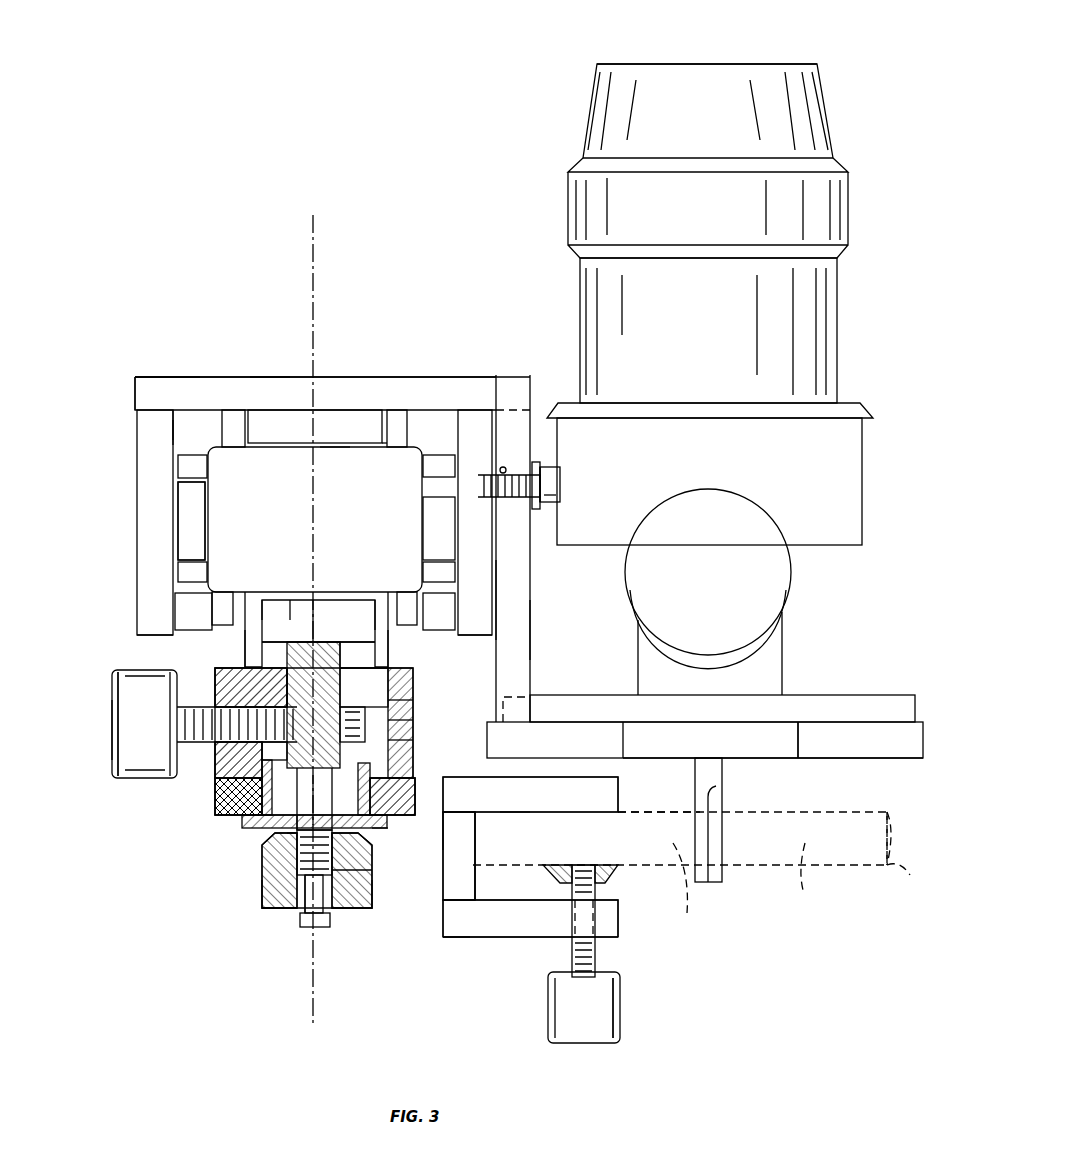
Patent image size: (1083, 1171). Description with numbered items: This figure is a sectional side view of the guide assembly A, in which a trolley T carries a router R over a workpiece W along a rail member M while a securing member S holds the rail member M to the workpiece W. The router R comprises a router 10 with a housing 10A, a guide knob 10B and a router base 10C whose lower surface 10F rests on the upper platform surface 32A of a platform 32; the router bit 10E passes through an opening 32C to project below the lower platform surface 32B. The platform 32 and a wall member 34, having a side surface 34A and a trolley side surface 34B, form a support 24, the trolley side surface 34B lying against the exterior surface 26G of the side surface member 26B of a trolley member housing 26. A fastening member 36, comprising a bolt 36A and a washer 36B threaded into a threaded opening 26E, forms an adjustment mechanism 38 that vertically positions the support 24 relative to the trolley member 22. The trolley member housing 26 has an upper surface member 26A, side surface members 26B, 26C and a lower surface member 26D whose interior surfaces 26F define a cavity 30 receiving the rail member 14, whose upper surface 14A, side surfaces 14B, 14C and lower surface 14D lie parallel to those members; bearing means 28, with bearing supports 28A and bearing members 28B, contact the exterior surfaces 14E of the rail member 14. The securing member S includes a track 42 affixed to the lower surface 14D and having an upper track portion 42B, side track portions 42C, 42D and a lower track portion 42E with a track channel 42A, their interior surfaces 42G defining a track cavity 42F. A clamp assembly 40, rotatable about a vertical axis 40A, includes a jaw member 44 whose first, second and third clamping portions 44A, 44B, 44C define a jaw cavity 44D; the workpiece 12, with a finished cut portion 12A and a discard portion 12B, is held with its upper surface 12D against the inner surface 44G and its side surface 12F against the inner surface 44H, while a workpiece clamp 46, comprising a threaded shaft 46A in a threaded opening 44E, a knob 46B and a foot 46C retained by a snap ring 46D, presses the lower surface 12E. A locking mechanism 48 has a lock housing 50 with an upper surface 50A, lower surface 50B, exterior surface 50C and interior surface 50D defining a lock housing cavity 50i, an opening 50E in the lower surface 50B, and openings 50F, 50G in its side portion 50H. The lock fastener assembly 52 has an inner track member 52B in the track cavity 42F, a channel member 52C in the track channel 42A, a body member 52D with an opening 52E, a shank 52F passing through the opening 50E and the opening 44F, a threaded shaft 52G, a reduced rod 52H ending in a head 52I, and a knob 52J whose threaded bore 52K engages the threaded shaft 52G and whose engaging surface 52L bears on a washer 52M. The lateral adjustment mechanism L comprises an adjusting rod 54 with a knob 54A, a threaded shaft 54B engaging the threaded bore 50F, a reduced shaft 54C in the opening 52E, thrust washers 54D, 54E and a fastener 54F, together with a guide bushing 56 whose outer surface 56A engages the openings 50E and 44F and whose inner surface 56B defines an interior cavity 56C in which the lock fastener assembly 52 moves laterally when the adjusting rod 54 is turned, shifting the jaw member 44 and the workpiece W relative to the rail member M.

The router 10 is at (590, 108).
The housing 10A is at (842, 325).
The guide knob 10B is at (780, 578).
The router base 10C is at (922, 693).
The router bit 10E is at (720, 882).
The lower surface 10F is at (815, 720).
The workpiece 12 is at (840, 870).
The finished cut portion 12A is at (696, 883).
The discard portion 12B is at (804, 881).
The upper surface 12D is at (838, 810).
The lower surface 12E is at (882, 870).
The side surface 12F is at (441, 870).
The rail member 14 is at (206, 449).
The upper surface 14A is at (393, 440).
The side surface 14B is at (430, 455).
The side surface 14C is at (186, 530).
The lower surface 14D is at (186, 605).
The exterior surfaces 14E is at (353, 445).
The trolley member 22 is at (222, 375).
The support 24 is at (926, 716).
The trolley member housing 26 is at (332, 375).
The upper surface member 26A is at (160, 377).
The side surface member 26B is at (455, 425).
The side surface member 26C is at (137, 422).
The lower surface member 26D is at (178, 633).
The threaded opening 26E is at (505, 473).
The interior surfaces 26F is at (175, 432).
The exterior surface 26G is at (497, 585).
The bearing means 28 is at (300, 425).
The bearing supports 28A is at (265, 420).
The bearing members 28B is at (232, 425).
The cavity 30 is at (186, 415).
The platform 32 is at (890, 760).
The upper platform surface 32A is at (850, 722).
The lower platform surface 32B is at (812, 770).
The opening 32C is at (775, 758).
The wall member 34 is at (515, 612).
The side surface 34A is at (532, 632).
The trolley side surface 34B is at (500, 680).
The fastening member 36 is at (565, 478).
The bolt 36A is at (560, 495).
The washer 36B is at (540, 510).
The adjustment mechanism 38 is at (556, 466).
The clamp assembly 40 is at (618, 938).
The vertical axis 40A is at (313, 620).
The track 42 is at (275, 588).
The track channel 42A is at (345, 655).
The upper track portion 42B is at (325, 592).
The side track portion 42C is at (246, 640).
The side track portion 42D is at (390, 635).
The lower track portion 42E is at (374, 603).
The track cavity 42F is at (298, 596).
The interior surfaces 42G is at (260, 610).
The jaw member 44 is at (620, 925).
The first clamping portion 44A is at (606, 798).
The second clamping portion 44B is at (528, 937).
The third clamping portion 44C is at (466, 940).
The jaw cavity 44D is at (500, 926).
The threaded opening 44E is at (598, 912).
The opening 44F is at (258, 814).
The inner surface 44G is at (515, 820).
The inner surface 44H is at (446, 857).
The workpiece clamp 46 is at (588, 1046).
The threaded shaft 46A is at (550, 975).
The knob 46B is at (610, 1015).
The foot 46C is at (560, 872).
The snap ring 46D is at (583, 868).
The locking mechanism 48 is at (262, 888).
The lock housing 50 is at (415, 768).
The upper surface 50A is at (390, 700).
The lower surface 50B is at (245, 800).
The exterior surface 50C is at (228, 776).
The interior surface 50D is at (392, 700).
The opening 50E is at (410, 770).
The threaded bore 50F is at (240, 716).
The opening 50G is at (395, 720).
The side portion 50H is at (395, 740).
The lock housing cavity 50i is at (364, 687).
The lock fastener assembly 52 is at (358, 915).
The inner track member 52B is at (286, 640).
The channel member 52C is at (318, 648).
The body member 52D is at (300, 678).
The opening 52E is at (308, 696).
The shank 52F is at (318, 800).
The threaded shaft 52G is at (372, 850).
The reduced rod 52H is at (303, 915).
The head 52I is at (314, 928).
The knob 52J is at (275, 908).
The threaded bore 52K is at (372, 870).
The engaging surface 52L is at (385, 828).
The washer 52M is at (280, 848).
The adjusting rod 54 is at (120, 780).
The knob 54A is at (125, 700).
The threaded shaft 54B is at (190, 720).
The reduced shaft 54C is at (262, 752).
The thrust washer 54D is at (285, 787).
The thrust washer 54E is at (342, 740).
The fastener 54F is at (364, 711).
The guide bushing 56 is at (270, 825).
The outer surface 56A is at (415, 790).
The inner surface 56B is at (392, 800).
The interior cavity 56C is at (285, 852).
The router R is at (768, 60).
The guide assembly A is at (235, 185).
The trolley T is at (268, 375).
The rail member M is at (333, 470).
The lateral adjustment mechanism L is at (130, 785).
The securing member S is at (470, 945).
The workpiece W is at (868, 868).